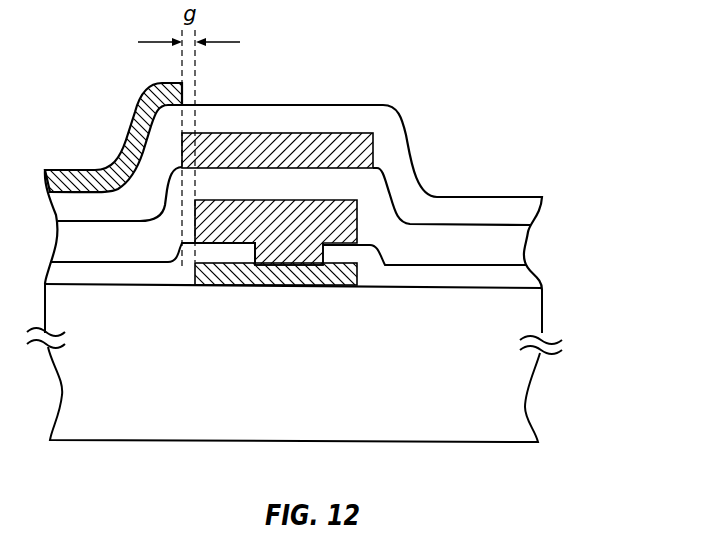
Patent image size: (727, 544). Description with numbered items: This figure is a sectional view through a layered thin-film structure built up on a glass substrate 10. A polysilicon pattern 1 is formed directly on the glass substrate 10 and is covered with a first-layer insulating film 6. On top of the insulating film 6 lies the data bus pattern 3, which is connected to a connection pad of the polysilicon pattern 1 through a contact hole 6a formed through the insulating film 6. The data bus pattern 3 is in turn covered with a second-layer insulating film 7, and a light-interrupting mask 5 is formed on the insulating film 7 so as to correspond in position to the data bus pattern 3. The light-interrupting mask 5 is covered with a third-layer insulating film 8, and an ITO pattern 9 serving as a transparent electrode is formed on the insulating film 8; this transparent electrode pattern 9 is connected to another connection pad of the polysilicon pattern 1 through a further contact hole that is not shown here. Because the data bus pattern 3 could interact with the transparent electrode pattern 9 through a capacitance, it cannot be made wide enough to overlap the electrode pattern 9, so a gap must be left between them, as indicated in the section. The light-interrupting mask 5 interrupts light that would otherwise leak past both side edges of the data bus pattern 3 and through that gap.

The polysilicon pattern 1 is at (222, 287).
The data bus pattern 3 is at (345, 218).
The light-interrupting mask 5 is at (362, 147).
The first-layer insulating film 6 is at (455, 280).
The contact hole 6a is at (323, 247).
The second-layer insulating film 7 is at (518, 246).
The third-layer insulating film 8 is at (465, 197).
The ITO pattern 9 is at (128, 138).
The glass substrate 10 is at (518, 388).